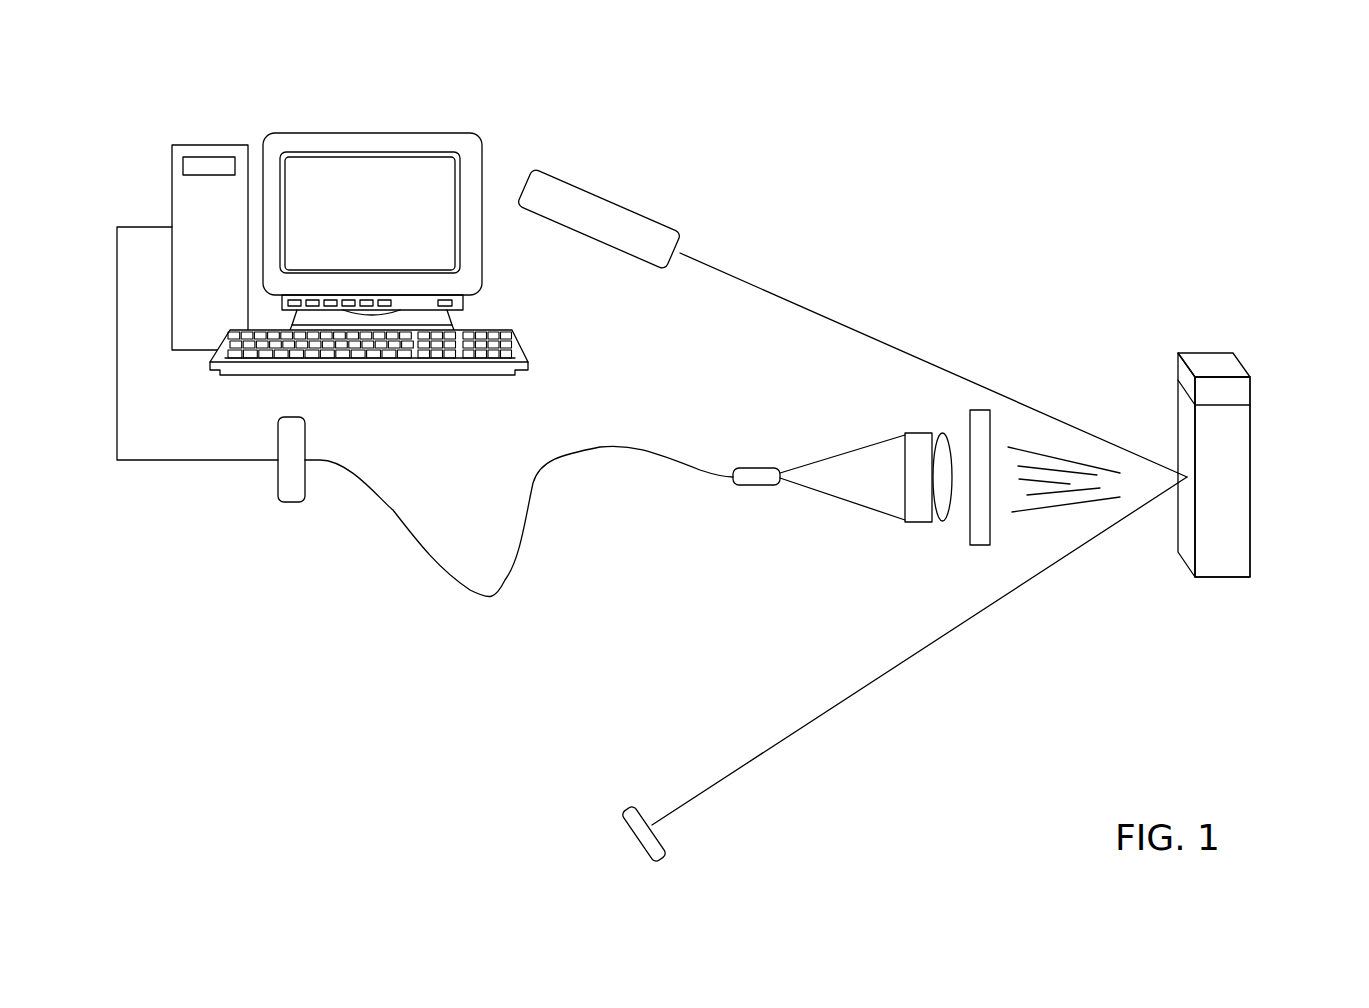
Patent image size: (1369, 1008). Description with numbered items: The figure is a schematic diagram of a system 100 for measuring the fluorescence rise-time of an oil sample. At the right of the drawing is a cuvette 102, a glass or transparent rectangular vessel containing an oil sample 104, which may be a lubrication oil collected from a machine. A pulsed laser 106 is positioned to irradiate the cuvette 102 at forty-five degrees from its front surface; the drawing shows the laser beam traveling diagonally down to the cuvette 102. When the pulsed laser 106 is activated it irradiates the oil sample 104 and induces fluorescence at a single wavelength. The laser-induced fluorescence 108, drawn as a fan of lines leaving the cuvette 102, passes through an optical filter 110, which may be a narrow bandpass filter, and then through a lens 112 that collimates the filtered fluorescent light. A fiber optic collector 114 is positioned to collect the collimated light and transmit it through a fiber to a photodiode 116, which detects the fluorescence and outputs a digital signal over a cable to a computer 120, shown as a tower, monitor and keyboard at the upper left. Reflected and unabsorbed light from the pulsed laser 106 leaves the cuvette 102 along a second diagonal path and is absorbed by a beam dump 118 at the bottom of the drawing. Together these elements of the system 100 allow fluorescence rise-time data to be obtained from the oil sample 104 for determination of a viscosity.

The system 100 is at (1033, 108).
The cuvette 102 is at (1252, 428).
The oil sample 104 is at (1253, 517).
The pulsed laser 106 is at (597, 193).
The laser-induced fluorescence 108 is at (1040, 447).
The optical filter 110 is at (980, 545).
The lens 112 is at (920, 522).
The fiber optic collector 114 is at (755, 487).
The photodiode 116 is at (290, 502).
The beam dump 118 is at (632, 835).
The computer 120 is at (387, 133).